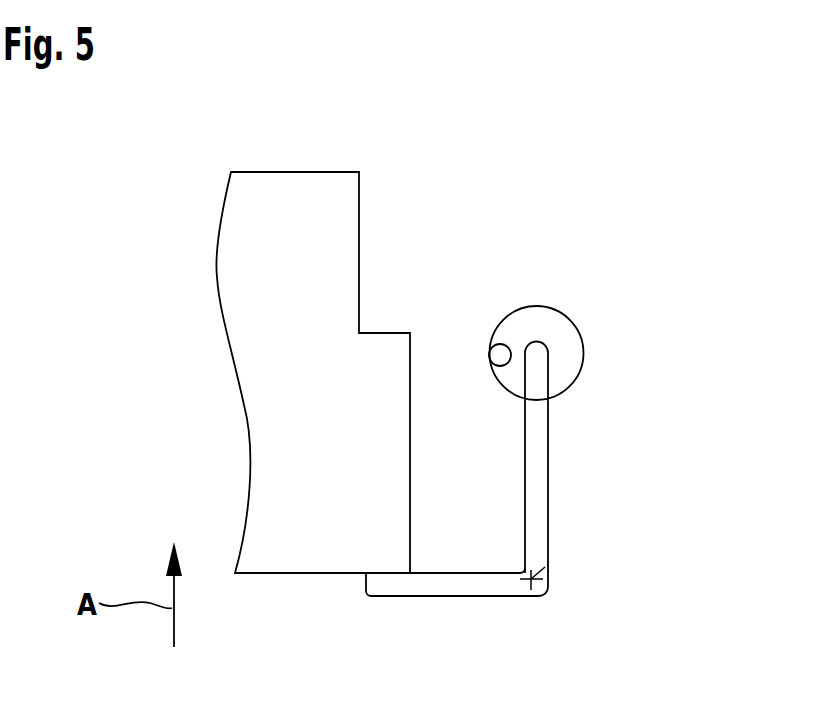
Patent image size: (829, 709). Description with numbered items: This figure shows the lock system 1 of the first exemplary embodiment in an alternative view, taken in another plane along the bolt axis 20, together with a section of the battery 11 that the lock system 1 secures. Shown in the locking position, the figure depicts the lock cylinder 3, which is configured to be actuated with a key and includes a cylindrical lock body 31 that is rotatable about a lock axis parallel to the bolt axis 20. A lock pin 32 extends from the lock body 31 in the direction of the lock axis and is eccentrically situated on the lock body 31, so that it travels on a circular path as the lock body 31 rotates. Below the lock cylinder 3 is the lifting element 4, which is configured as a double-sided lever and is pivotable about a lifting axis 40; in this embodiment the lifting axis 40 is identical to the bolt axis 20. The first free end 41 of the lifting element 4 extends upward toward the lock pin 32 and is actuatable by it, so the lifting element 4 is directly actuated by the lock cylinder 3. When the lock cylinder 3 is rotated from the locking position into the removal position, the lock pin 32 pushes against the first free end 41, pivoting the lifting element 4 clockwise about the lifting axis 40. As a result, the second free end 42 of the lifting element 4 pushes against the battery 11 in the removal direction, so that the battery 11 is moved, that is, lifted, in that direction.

The lock system 1 is at (601, 186).
The lock cylinder 3 is at (580, 311).
The lifting element 4 is at (524, 509).
The battery 11 is at (262, 413).
The bolt axis 20 is at (524, 509).
The lock body 31 is at (568, 362).
The lock pin 32 is at (499, 358).
The lifting axis 40 is at (524, 509).
The first free end 41 is at (540, 437).
The second free end 42 is at (377, 583).